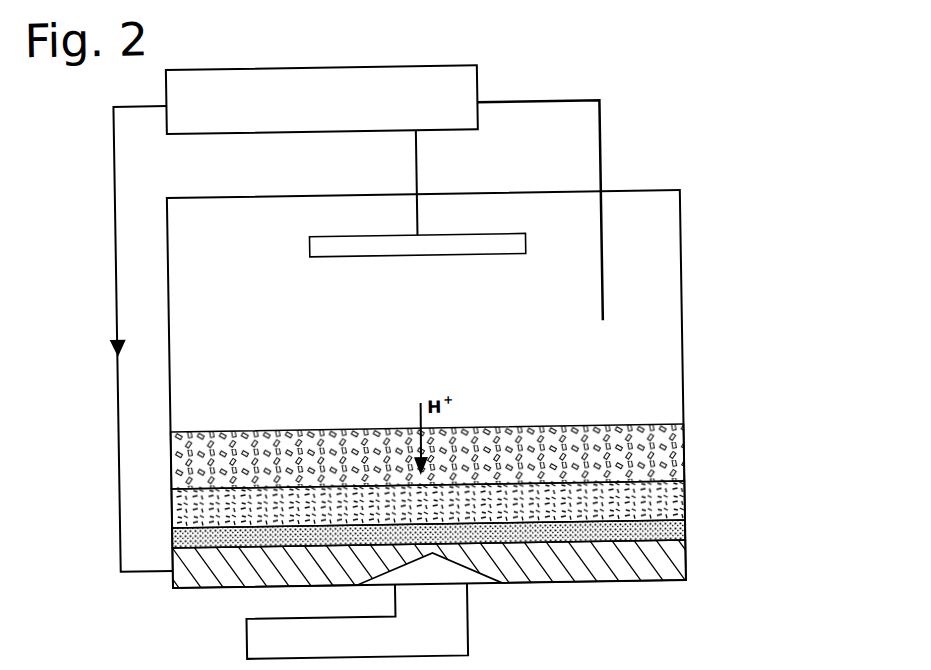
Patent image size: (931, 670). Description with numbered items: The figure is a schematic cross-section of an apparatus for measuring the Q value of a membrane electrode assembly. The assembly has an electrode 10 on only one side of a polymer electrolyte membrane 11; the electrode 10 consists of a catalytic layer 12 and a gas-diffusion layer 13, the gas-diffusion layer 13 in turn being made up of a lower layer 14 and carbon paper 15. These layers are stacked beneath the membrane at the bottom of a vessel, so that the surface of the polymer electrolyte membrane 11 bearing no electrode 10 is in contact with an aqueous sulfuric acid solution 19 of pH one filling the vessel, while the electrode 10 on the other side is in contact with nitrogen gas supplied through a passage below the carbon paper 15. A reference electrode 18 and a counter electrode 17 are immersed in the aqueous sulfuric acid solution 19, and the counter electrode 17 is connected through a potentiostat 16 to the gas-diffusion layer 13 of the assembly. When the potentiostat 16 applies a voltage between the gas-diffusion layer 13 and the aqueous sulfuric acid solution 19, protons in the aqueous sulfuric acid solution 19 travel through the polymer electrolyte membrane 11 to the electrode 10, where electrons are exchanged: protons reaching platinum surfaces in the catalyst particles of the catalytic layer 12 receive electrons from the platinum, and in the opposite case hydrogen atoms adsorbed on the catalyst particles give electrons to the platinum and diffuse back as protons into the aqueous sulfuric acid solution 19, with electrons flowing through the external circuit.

The electrode 10 is at (512, 506).
The polymer electrolyte membrane 11 is at (687, 452).
The catalytic layer 12 is at (682, 498).
The gas-diffusion layer 13 is at (694, 540).
The lower layer 14 is at (683, 529).
The carbon paper 15 is at (657, 573).
The potentiostat 16 is at (485, 75).
The counter electrode 17 is at (513, 247).
The reference electrode 18 is at (608, 310).
The aqueous sulfuric acid solution 19 is at (666, 389).